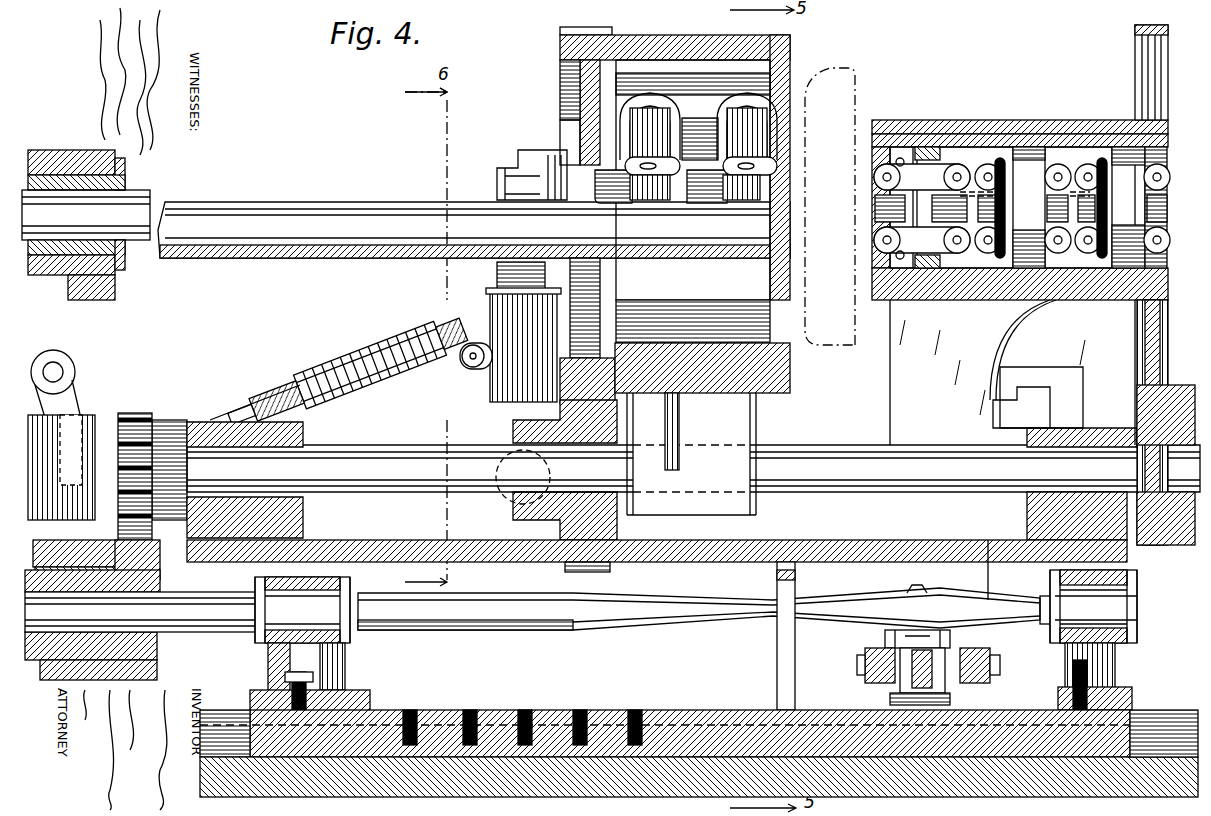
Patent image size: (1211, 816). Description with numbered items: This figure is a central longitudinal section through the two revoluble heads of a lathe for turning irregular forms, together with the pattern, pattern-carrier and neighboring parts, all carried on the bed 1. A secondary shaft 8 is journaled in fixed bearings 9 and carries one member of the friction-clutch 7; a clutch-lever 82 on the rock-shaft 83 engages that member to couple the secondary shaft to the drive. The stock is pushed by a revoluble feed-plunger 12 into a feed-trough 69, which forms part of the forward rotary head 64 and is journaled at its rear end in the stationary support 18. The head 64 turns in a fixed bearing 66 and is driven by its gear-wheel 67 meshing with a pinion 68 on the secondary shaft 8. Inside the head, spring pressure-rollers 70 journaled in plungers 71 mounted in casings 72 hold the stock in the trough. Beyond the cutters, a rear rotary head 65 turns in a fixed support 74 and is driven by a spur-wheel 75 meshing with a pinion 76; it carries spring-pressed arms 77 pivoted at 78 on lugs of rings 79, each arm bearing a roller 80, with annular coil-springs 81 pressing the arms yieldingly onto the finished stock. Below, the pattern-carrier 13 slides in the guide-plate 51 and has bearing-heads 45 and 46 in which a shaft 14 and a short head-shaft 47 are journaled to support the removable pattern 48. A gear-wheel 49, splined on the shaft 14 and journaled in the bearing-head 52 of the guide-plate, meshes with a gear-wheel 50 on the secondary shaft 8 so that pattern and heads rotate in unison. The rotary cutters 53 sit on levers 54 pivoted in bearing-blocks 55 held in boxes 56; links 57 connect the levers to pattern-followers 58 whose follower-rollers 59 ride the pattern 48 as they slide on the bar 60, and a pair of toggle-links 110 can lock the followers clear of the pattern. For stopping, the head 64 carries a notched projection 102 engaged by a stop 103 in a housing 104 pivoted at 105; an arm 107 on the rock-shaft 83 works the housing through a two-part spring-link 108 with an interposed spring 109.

The bed 1 is at (768, 540).
The friction-clutch 7 is at (61, 467).
The secondary shaft 8 is at (830, 492).
The fixed bearings 9 is at (312, 512).
The feed-plunger 12 is at (86, 212).
The pattern-carrier 13 is at (1120, 720).
The shaft 14 is at (215, 632).
The stationary support 18 is at (115, 291).
The bearing-head 45 is at (340, 660).
The bearing-head 46 is at (1118, 665).
The head-shaft 47 is at (1140, 607).
The pattern 48 is at (650, 620).
The gear-wheel 49 is at (162, 578).
The gear-wheel 50 is at (140, 413).
The guide-plate 51 is at (430, 760).
The bearing-head 52 is at (68, 548).
The rotary cutters 53 is at (830, 206).
The levers 54 is at (992, 578).
The bearing-blocks 55 is at (1021, 407).
The boxes 56 is at (1040, 375).
The links 57 is at (990, 660).
The pattern-followers 58 is at (885, 638).
The follower-roller 59 is at (915, 586).
The bar 60 is at (912, 680).
The rotary head 64 is at (676, 60).
The rotary head 65 is at (1000, 147).
The fixed bearing 66 is at (696, 385).
The gear-wheel 67 is at (575, 44).
The pinion 68 is at (582, 572).
The feed-trough 69 is at (256, 258).
The spring pressure-rollers 70 is at (745, 200).
The plungers 71 is at (700, 205).
The casings 72 is at (698, 126).
The fixed support 74 is at (938, 300).
The spur-wheel 75 is at (1135, 315).
The pinion 76 is at (1137, 392).
The spring-pressed arms 77 is at (1105, 147).
The pivot 78 is at (980, 268).
The rings 79 is at (905, 147).
The roller 80 is at (1060, 300).
The annular coil-springs 81 is at (1097, 147).
The clutch-lever 82 is at (80, 395).
The rock-shaft 83 is at (75, 368).
The notched projection 102 is at (533, 150).
The stop 103 is at (497, 275).
The housing 104 is at (538, 414).
The pivot 105 is at (500, 510).
The arm 107 is at (98, 412).
The spring-link 108 is at (247, 405).
The spring 109 is at (345, 385).
The toggle-links 110 is at (955, 700).